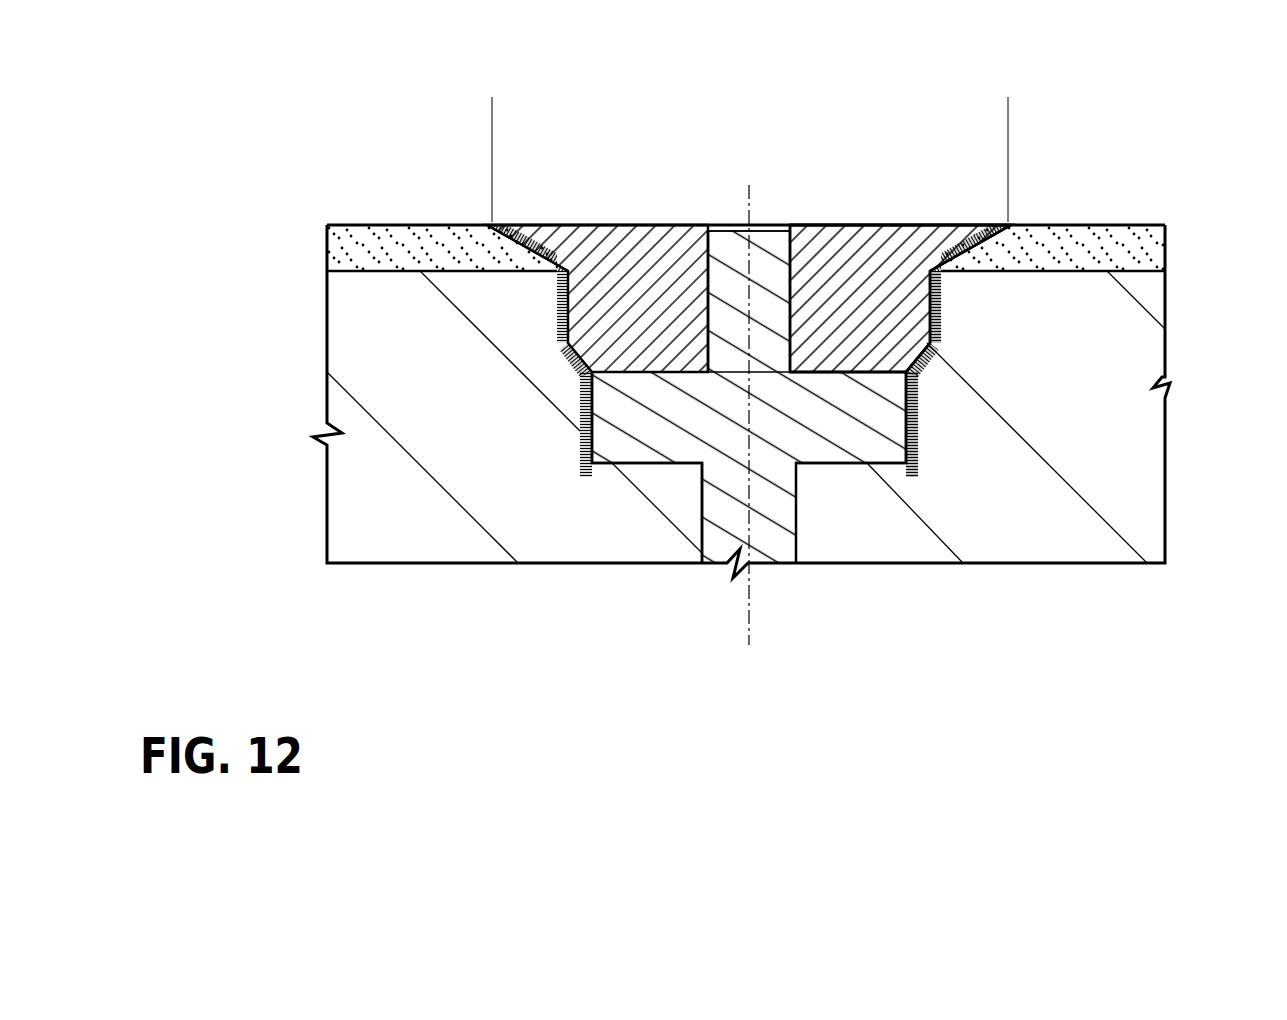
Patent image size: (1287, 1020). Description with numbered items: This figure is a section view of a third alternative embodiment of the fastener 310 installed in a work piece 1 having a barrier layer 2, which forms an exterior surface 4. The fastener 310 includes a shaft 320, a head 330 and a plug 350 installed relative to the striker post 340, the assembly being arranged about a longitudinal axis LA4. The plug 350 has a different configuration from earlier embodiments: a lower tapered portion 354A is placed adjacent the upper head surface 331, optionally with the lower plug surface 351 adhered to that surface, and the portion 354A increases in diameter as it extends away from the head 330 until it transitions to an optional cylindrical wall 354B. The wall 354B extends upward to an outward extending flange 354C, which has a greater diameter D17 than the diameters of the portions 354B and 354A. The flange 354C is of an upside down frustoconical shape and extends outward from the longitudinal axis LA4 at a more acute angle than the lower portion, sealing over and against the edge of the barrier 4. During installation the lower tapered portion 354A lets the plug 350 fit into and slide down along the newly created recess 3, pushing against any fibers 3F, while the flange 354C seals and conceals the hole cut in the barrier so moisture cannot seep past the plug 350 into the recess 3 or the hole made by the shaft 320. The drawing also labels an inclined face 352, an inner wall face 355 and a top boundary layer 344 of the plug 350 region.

The substrate 1 is at (1107, 482).
The insulating layer 2 is at (1073, 240).
The recess 3 is at (938, 322).
The fibers 3F is at (560, 299).
The barrier 4 is at (1132, 227).
The fastener 310 is at (611, 502).
The shaft 320 is at (763, 540).
The head 330 is at (913, 437).
The upper head surface 331 is at (824, 368).
The striker post 340 is at (761, 266).
The top boundary layer 344 is at (726, 226).
The plug 350 is at (915, 222).
The lower plug surface 351 is at (842, 223).
The inclined face 352 is at (870, 362).
The lower tapered portion 354A is at (927, 358).
The cylindrical wall 354B is at (940, 307).
The outward extending flange 354C is at (970, 245).
The inner wall face 355 is at (707, 317).
The diameter D17 is at (1008, 112).
The central axis LA4 is at (749, 441).